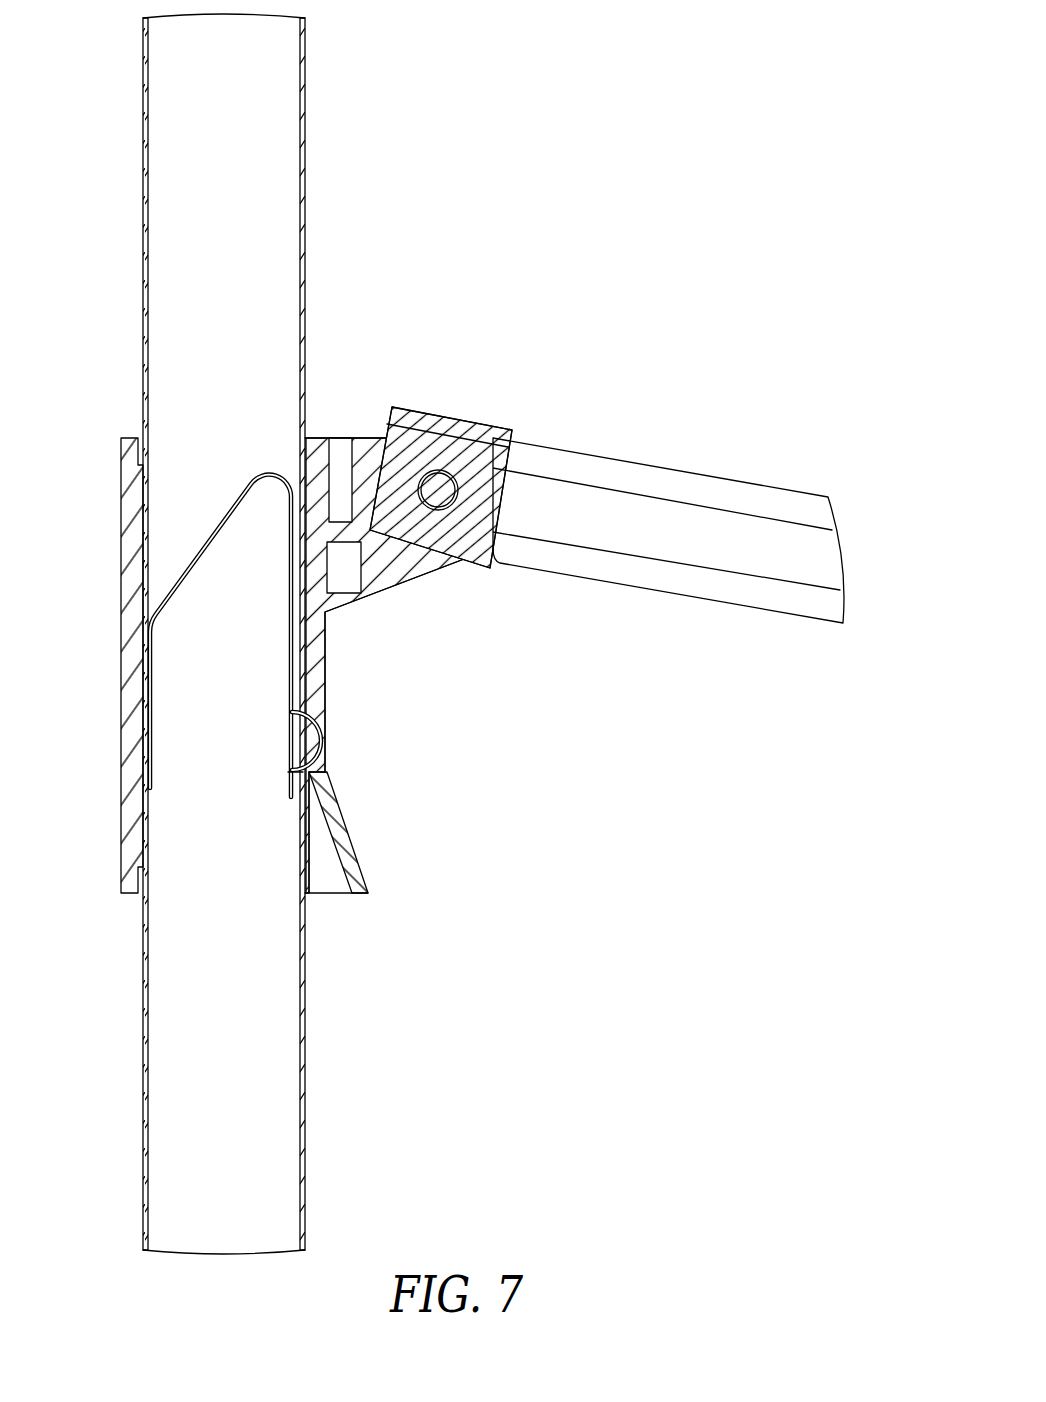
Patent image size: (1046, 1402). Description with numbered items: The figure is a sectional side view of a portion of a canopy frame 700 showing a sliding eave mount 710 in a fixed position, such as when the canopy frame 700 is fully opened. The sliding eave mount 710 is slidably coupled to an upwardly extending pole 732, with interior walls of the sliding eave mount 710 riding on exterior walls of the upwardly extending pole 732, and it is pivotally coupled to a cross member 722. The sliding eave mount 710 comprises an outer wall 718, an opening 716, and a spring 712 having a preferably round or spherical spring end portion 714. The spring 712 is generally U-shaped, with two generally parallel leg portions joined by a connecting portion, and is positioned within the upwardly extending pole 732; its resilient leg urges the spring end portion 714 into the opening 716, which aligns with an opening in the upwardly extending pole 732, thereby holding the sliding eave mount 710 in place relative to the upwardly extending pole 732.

The canopy frame 700 is at (530, 243).
The sliding eave mount 710 is at (122, 803).
The spring 712 is at (200, 550).
The spring end portion 714 is at (325, 717).
The opening 716 is at (327, 762).
The outer wall 718 is at (348, 840).
The cross member 722 is at (650, 472).
The upwardly extending pole 732 is at (305, 1008).